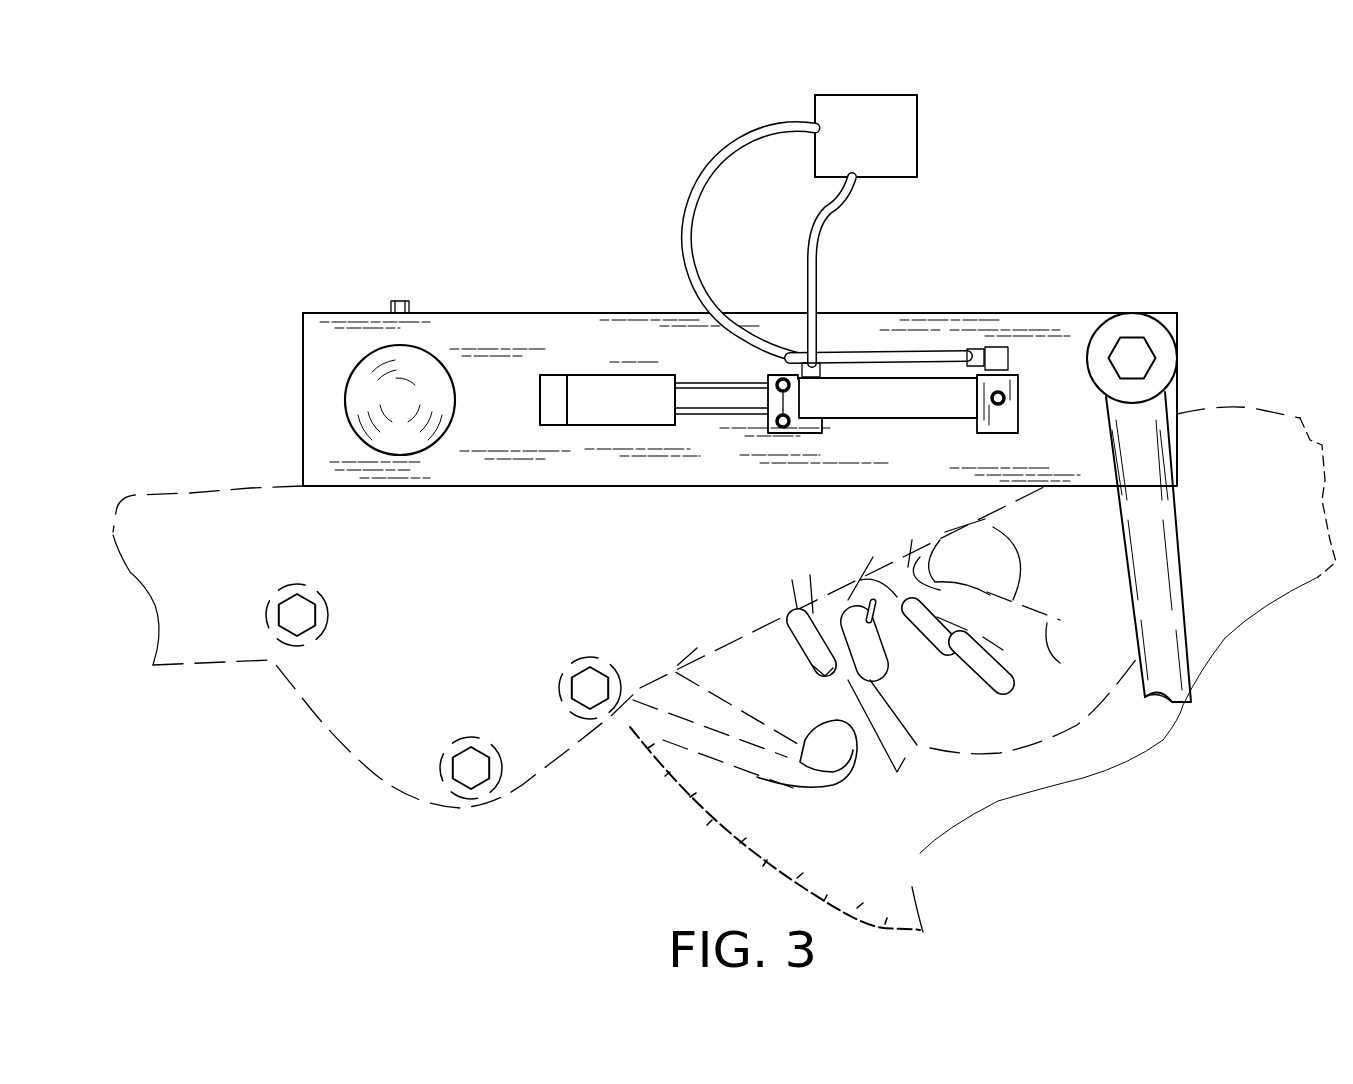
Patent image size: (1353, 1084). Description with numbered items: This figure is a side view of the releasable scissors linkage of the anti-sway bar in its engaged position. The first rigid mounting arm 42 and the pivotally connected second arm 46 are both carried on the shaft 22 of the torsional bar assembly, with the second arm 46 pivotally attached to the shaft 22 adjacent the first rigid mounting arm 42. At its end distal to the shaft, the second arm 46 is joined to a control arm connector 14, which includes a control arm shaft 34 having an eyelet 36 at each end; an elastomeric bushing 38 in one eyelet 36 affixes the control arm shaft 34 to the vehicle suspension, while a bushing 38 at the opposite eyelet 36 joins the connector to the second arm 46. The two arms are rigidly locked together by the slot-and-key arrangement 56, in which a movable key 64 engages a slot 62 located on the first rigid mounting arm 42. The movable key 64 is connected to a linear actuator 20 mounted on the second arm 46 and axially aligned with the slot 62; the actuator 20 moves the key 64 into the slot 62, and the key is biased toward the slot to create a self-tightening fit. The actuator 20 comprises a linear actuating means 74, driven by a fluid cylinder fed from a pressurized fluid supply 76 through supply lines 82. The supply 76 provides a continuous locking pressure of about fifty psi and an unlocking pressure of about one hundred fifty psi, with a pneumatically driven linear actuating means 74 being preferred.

The control arm connector 14 is at (1265, 455).
The linear actuator 20 is at (480, 553).
The shaft 22 is at (568, 180).
The control arm shaft 34 is at (1160, 577).
The eyelet 36 is at (1108, 312).
The bushing 38 is at (1160, 355).
The first rigid mounting arm 42 is at (480, 403).
The pivotally connected second arm 46 is at (691, 362).
The slot-and-key arrangement 56 is at (700, 596).
The slot 62 is at (557, 387).
The movable key 64 is at (609, 410).
The linear actuating means 74 is at (730, 407).
The pressurized fluid supply 76 is at (859, 143).
The supply lines 82 is at (803, 282).